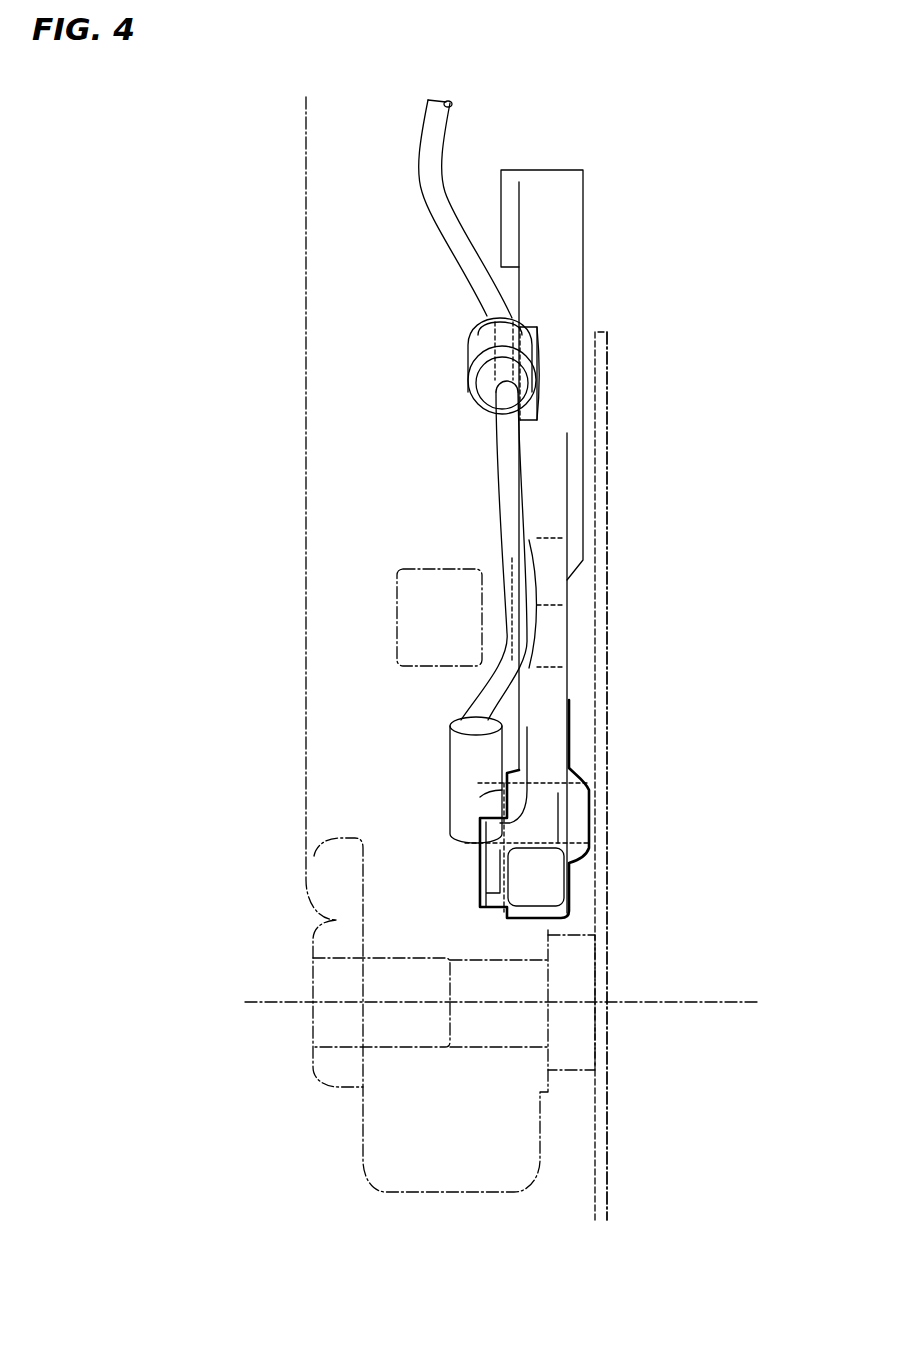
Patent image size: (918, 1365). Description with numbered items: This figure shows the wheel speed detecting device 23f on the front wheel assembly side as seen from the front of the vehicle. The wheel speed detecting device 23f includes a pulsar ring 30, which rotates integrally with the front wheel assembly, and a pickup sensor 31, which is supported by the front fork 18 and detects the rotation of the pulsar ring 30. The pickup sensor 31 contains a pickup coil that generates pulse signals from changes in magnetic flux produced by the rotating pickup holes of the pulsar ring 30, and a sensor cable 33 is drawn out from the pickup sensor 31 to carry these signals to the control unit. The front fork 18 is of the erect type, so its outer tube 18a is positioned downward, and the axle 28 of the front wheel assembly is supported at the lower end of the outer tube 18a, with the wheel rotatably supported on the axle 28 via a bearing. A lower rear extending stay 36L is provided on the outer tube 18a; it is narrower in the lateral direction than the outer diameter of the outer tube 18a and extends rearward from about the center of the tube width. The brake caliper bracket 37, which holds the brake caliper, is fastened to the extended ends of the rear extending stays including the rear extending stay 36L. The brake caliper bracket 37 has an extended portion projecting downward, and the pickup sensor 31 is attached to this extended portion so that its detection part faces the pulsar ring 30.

The front fork 18 is at (305, 518).
The outer tube 18a is at (305, 343).
The wheel speed detecting device 23f is at (622, 708).
The axle 28 is at (575, 1057).
The pulsar ring 30 is at (609, 365).
The pickup sensor 31 is at (582, 840).
The sensor cable 33 is at (500, 510).
The rear extending stay 36L is at (400, 632).
The brake caliper bracket 37 is at (585, 257).